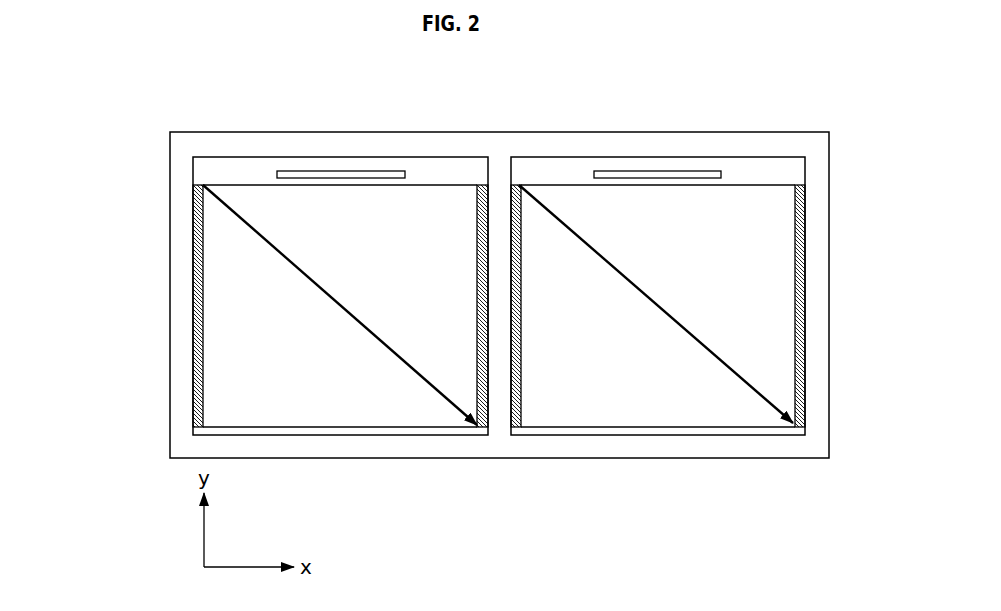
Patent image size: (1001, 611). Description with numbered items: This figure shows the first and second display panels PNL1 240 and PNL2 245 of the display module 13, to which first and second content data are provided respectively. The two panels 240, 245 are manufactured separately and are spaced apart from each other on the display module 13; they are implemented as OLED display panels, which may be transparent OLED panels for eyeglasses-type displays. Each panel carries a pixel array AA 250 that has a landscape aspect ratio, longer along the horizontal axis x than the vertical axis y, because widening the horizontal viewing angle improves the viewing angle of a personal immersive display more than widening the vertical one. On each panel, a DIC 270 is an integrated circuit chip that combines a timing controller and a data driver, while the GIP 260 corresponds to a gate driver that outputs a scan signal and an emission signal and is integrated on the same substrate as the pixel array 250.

The display module 13 is at (829, 263).
The first display panel 240 is at (443, 157).
The second display panel 245 is at (757, 157).
The pixel array 250 is at (498, 305).
The GIP 260 is at (193, 343).
The DIC 270 is at (340, 174).